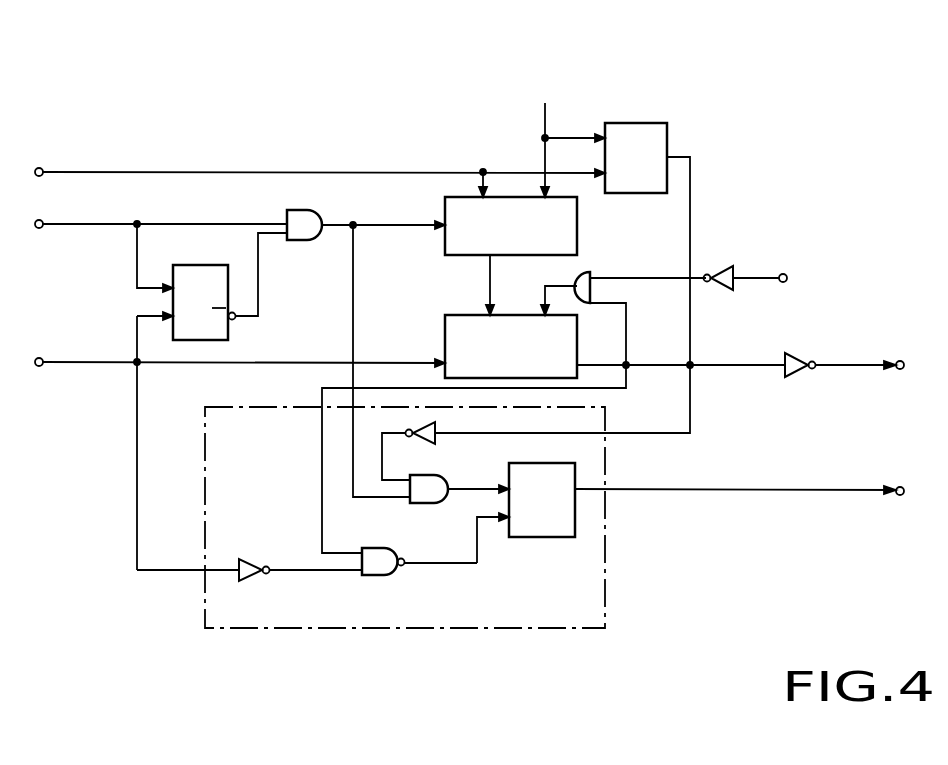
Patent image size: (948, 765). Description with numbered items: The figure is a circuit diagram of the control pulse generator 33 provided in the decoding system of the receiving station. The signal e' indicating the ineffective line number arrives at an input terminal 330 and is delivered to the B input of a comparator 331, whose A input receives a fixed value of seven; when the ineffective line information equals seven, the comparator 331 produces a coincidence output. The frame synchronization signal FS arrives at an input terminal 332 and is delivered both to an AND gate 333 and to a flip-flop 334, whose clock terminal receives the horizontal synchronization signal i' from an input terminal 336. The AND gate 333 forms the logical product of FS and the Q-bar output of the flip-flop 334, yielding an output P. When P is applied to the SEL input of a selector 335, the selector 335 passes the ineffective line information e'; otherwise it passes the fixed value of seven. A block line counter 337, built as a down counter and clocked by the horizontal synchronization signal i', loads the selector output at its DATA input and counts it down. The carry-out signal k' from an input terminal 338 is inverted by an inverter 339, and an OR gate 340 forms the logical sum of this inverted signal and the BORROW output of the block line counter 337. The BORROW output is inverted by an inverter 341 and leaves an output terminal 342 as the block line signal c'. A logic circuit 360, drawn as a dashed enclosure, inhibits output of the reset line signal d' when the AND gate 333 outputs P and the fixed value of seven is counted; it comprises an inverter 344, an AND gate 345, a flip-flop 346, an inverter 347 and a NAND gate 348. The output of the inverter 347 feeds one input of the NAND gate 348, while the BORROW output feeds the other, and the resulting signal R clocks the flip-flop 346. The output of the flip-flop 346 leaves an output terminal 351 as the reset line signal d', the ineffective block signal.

The control pulse generator 33 is at (920, 59).
The input terminal 330 is at (43, 168).
The comparator 331 is at (655, 122).
The input terminal 332 is at (43, 221).
The AND gate 333 is at (312, 213).
The flip-flop 334 is at (229, 282).
The selector 335 is at (578, 236).
The input terminal 336 is at (43, 359).
The block line counter 337 is at (445, 337).
The input terminal 338 is at (786, 283).
The inverter 339 is at (728, 291).
The OR gate 340 is at (583, 304).
The inverter 341 is at (800, 353).
The output terminal 342 is at (903, 362).
The inverter 344 is at (438, 427).
The AND gate 345 is at (435, 475).
The flip-flop 346 is at (558, 538).
The inverter 347 is at (252, 578).
The NAND gate 348 is at (375, 576).
The output terminal 351 is at (903, 489).
The logic circuit 360 is at (606, 608).